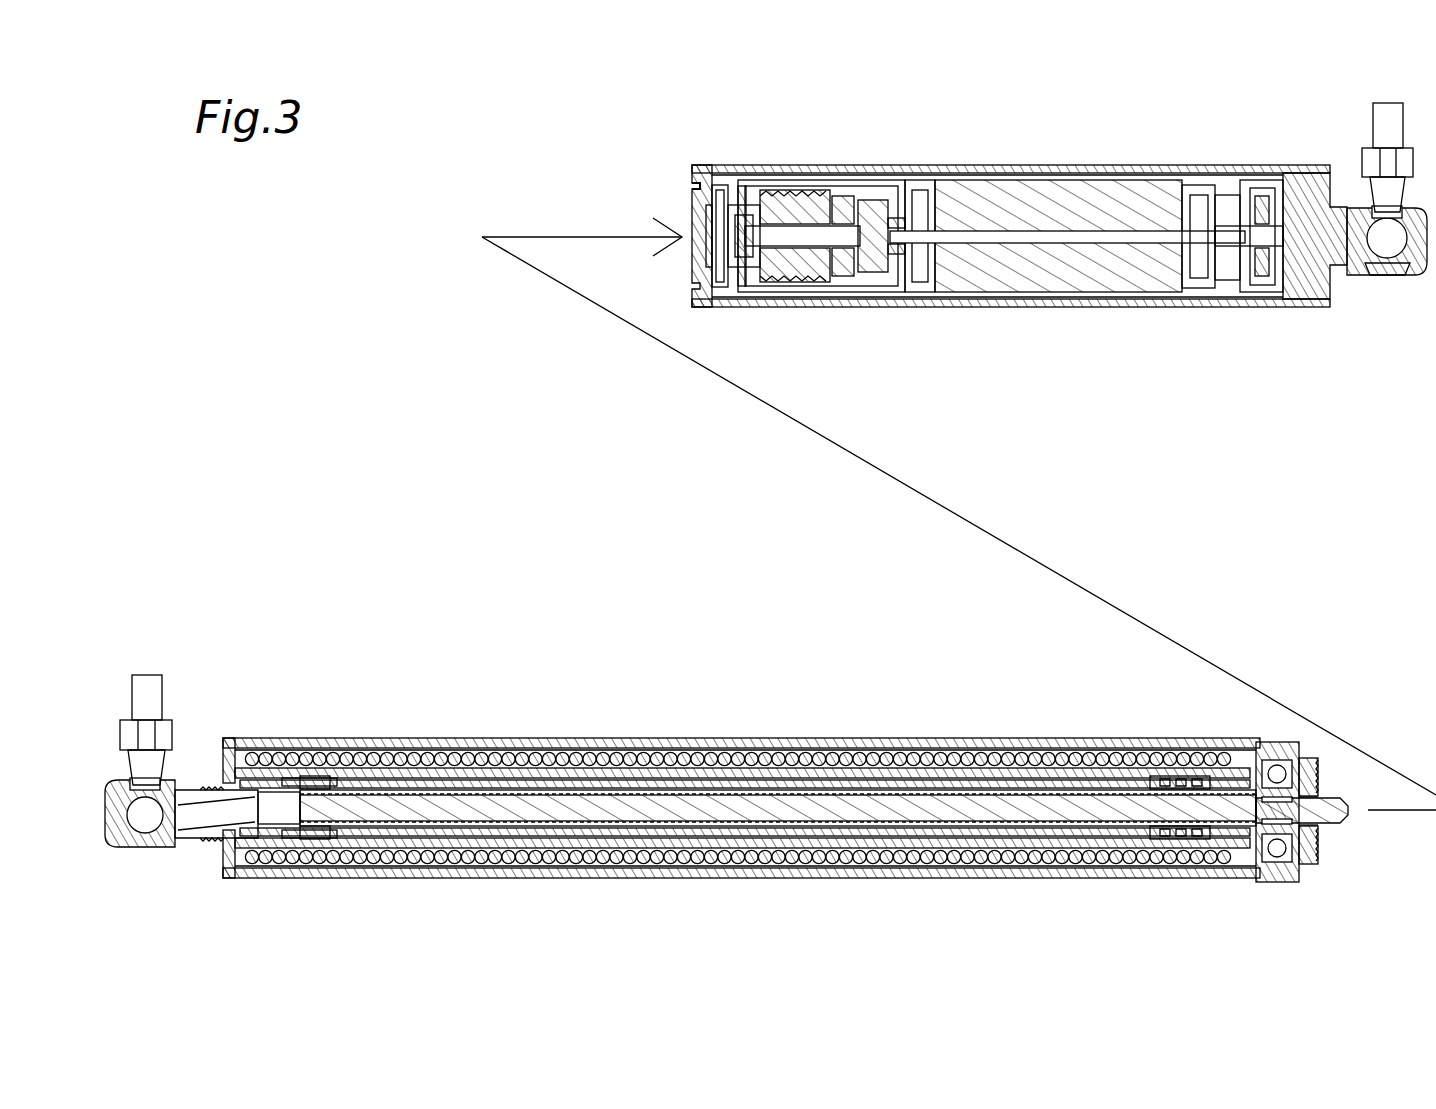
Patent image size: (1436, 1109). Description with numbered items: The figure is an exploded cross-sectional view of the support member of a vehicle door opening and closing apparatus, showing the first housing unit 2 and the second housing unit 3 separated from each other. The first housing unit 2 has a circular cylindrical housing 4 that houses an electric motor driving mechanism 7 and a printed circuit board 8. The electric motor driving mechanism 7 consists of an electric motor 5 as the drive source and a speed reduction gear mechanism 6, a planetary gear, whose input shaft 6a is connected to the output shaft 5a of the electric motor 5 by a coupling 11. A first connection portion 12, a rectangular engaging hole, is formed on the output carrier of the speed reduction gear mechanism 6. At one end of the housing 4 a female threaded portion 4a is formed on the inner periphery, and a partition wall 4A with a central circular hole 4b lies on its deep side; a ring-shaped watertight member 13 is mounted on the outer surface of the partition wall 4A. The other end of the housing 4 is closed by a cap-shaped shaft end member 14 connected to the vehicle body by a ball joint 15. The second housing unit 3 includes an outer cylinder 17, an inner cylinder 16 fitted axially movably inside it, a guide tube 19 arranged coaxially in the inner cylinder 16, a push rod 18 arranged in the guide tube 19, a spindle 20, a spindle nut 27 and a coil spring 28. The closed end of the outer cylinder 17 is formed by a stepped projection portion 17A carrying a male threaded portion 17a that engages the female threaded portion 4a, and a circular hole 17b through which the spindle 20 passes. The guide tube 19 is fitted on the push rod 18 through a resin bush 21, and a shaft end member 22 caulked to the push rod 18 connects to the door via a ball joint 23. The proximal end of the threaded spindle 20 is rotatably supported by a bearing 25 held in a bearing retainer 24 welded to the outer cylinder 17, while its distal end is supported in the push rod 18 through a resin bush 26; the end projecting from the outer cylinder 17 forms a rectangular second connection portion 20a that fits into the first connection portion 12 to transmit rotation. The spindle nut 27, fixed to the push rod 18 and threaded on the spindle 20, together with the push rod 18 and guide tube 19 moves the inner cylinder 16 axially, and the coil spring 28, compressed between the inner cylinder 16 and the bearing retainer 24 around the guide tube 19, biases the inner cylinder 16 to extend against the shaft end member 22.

The first housing unit 2 is at (1126, 140).
The second housing unit 3 is at (745, 683).
The housing 4 is at (1195, 166).
The female threaded portion 4a is at (697, 192).
The partition wall 4A is at (710, 262).
The circular hole 4b is at (712, 247).
The electric motor 5 is at (983, 193).
The output shaft 5a is at (1068, 242).
The speed reduction gear mechanism 6 is at (836, 188).
The input shaft 6a is at (822, 285).
The electric motor driving mechanism 7 is at (1005, 108).
The printed circuit board 8 is at (1246, 276).
The coupling 11 is at (882, 282).
The first connection portion 12 is at (740, 298).
The watertight member 13 is at (710, 203).
The shaft end member 14 is at (1398, 272).
The ball joint 15 is at (1380, 133).
The inner cylinder 16 is at (288, 745).
The outer cylinder 17 is at (477, 742).
The stepped projection portion 17A is at (1309, 765).
The male threaded portion 17a is at (1310, 864).
The circular hole 17b is at (1309, 797).
The push rod 18 is at (635, 783).
The guide tube 19 is at (540, 770).
The spindle 20 is at (797, 812).
The second connection portion 20a is at (1346, 819).
The resin bush 21 is at (315, 836).
The shaft end member 22 is at (168, 834).
The ball joint 23 is at (150, 700).
The bearing retainer 24 is at (1262, 746).
The bearing 25 is at (1276, 846).
The resin bush 26 is at (320, 786).
The spindle nut 27 is at (1177, 780).
The coil spring 28 is at (643, 862).